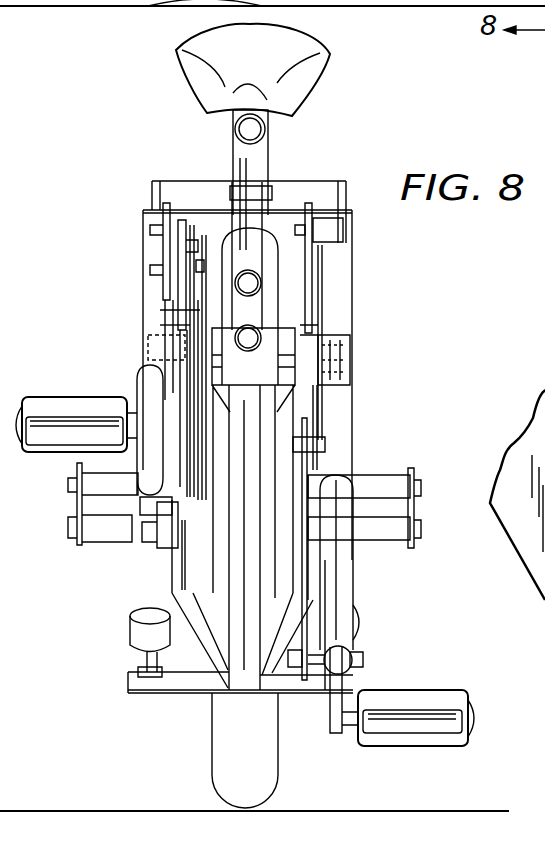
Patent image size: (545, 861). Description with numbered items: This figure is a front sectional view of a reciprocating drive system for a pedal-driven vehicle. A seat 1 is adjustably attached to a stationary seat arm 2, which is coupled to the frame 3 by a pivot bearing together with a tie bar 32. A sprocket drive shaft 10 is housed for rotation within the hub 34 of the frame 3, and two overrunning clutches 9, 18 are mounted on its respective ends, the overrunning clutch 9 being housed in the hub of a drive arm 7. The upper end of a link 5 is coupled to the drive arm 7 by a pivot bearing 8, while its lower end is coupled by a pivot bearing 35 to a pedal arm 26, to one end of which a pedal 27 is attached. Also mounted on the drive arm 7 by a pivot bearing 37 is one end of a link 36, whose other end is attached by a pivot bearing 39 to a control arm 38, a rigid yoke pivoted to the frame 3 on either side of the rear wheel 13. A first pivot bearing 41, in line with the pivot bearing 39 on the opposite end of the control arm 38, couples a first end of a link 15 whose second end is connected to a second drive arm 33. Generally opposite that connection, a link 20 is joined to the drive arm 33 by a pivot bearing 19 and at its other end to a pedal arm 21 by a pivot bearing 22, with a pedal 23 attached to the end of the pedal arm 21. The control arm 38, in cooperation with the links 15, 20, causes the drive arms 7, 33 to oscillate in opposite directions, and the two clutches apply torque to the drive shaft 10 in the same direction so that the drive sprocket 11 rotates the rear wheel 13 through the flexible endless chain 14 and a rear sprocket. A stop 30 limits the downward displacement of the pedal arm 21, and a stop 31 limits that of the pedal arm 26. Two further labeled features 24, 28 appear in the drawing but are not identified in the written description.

The seat 1 is at (180, 60).
The seat arm 2 is at (266, 150).
The frame 3 is at (250, 322).
The link 5 is at (182, 308).
The drive arm 7 is at (185, 318).
The pivot bearing 8 is at (185, 210).
The overrunning clutch 9 is at (143, 335).
The sprocket drive shaft 10 is at (338, 352).
The drive sprocket 11 is at (200, 293).
The rear wheel 13 is at (212, 735).
The flexible endless chain 14 is at (208, 218).
The link 15 is at (318, 270).
The overrunning clutch 18 is at (333, 330).
The pivot bearing 19 is at (307, 438).
The link 20 is at (310, 560).
The pedal arm 21 is at (355, 592).
The pivot bearing 22 is at (313, 690).
The pedal 23 is at (398, 693).
The bracket 24 is at (397, 476).
The pedal arm 26 is at (135, 398).
The pedal 27 is at (60, 398).
The bracket 28 is at (85, 492).
The stop 30 is at (356, 636).
The stop 31 is at (130, 622).
The tie bar 32 is at (250, 212).
The drive arm 33 is at (320, 408).
The hub 34 is at (305, 325).
The pivot bearing 35 is at (175, 440).
The link 36 is at (160, 250).
The pivot bearing 37 is at (165, 290).
The control arm 38 is at (310, 182).
The pivot bearing 39 is at (160, 210).
The first pivot bearing 41 is at (316, 215).